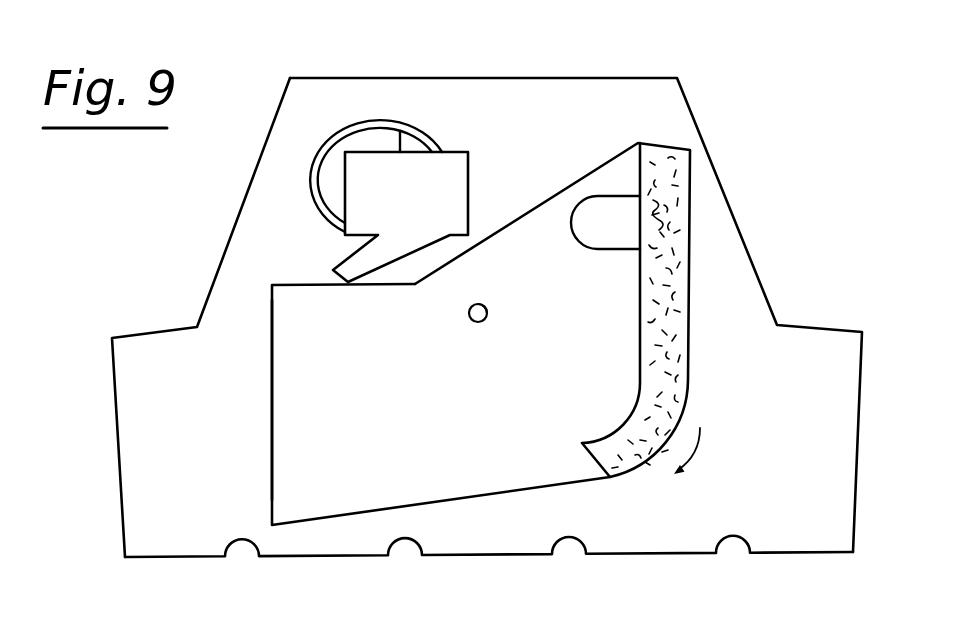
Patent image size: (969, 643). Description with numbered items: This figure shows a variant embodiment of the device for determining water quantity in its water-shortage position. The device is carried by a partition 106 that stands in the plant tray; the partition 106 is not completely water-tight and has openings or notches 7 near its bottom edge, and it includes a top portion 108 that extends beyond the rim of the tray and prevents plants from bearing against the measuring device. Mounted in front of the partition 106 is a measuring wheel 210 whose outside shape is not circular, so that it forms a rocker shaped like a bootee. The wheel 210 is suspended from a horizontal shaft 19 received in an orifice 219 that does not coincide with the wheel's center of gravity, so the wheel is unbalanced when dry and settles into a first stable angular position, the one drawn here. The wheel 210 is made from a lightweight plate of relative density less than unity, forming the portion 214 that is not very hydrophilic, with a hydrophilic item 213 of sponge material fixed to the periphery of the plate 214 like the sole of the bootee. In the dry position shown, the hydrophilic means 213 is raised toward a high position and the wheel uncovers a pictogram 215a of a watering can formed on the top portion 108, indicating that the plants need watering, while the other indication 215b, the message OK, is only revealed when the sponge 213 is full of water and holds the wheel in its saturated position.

The notches 7 is at (570, 554).
The horizontal shaft 19 is at (485, 318).
The partition 106 is at (150, 360).
The top portion of the partition 108 is at (732, 272).
The measuring wheel 210 is at (255, 446).
The hydrophilic means 213 is at (660, 392).
The not very hydrophilic portion 214 is at (272, 356).
The water-shortage indication 215a is at (413, 165).
The OK indication 215b is at (610, 203).
The orifice 219 is at (470, 317).